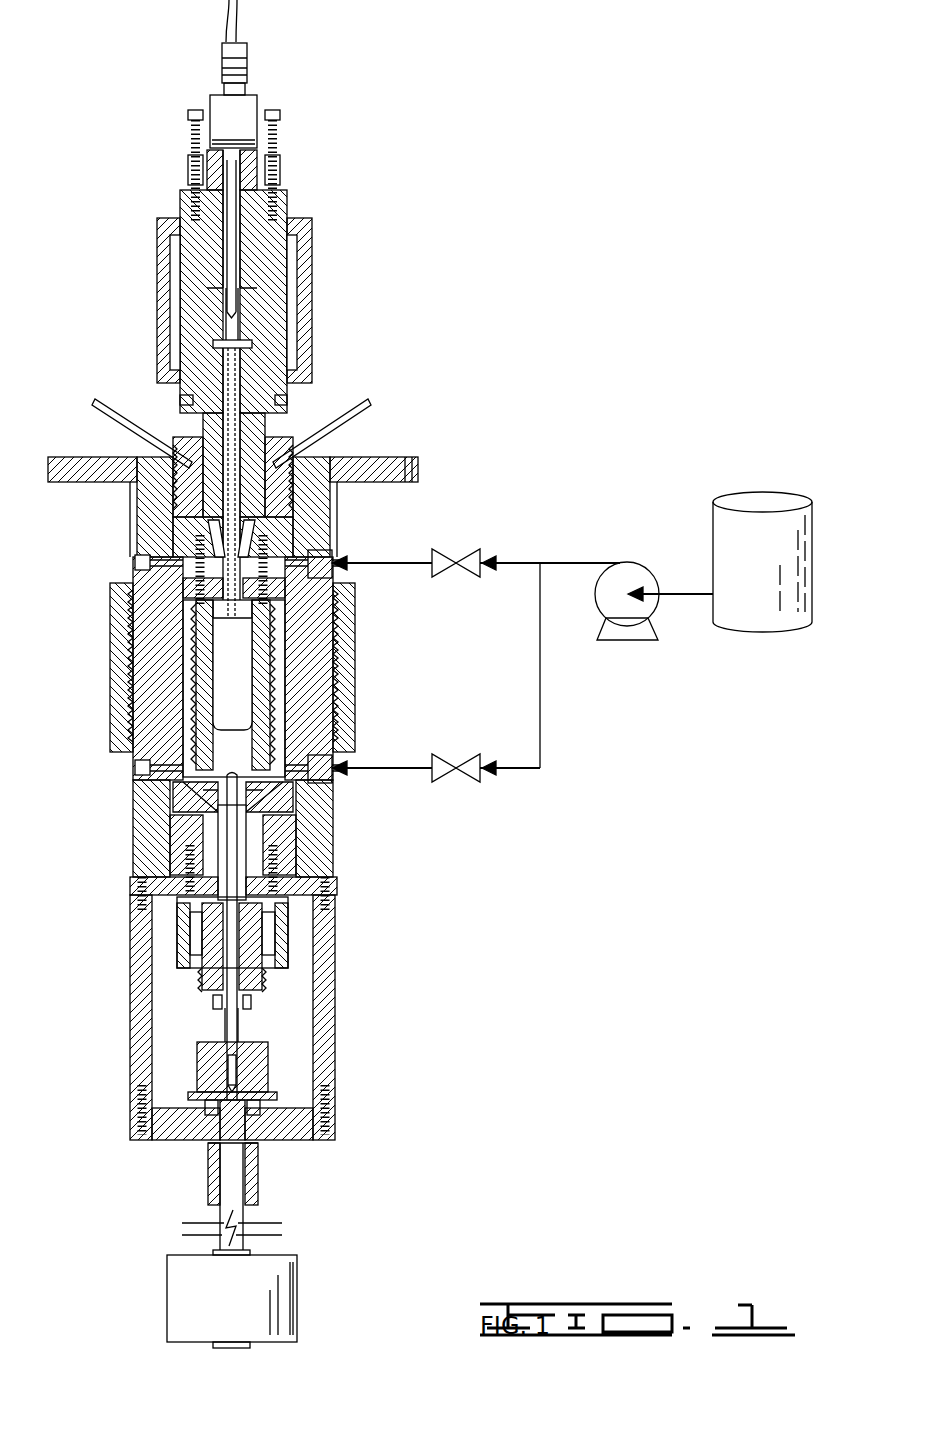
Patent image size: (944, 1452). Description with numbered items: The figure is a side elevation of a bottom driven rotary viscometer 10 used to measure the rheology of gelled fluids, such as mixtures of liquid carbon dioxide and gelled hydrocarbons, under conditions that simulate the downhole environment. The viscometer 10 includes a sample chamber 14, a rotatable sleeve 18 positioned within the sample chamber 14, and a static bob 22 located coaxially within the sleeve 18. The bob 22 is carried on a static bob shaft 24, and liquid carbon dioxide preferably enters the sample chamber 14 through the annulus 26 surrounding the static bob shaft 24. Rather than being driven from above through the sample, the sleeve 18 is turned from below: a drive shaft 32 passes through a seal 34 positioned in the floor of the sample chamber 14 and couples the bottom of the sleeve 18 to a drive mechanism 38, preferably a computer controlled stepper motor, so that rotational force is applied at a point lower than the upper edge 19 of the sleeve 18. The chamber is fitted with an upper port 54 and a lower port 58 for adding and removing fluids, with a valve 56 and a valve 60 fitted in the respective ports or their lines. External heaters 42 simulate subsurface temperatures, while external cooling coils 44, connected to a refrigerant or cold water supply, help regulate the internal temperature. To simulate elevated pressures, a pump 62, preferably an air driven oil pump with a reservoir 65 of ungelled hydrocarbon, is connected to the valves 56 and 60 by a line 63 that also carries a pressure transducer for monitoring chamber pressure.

The bottom driven rotary viscometer 10 is at (566, 322).
The sample chamber 14 is at (283, 743).
The rotatable sleeve 18 is at (283, 680).
The upper edge 19 is at (267, 610).
The static bob 22 is at (213, 738).
The static bob shaft 24 is at (237, 532).
The annulus 26 is at (208, 533).
The drive shaft 32 is at (240, 1023).
The seal 34 is at (200, 792).
The drive mechanism 38 is at (167, 1272).
The external heaters 42 is at (137, 507).
The external cooling coils 44 is at (112, 641).
The upper port 54 is at (322, 553).
The valve 56 is at (470, 548).
The lower port 58 is at (335, 790).
The valve 60 is at (445, 778).
The pump 62 is at (622, 635).
The line 63 is at (581, 562).
The reservoir 65 is at (745, 500).